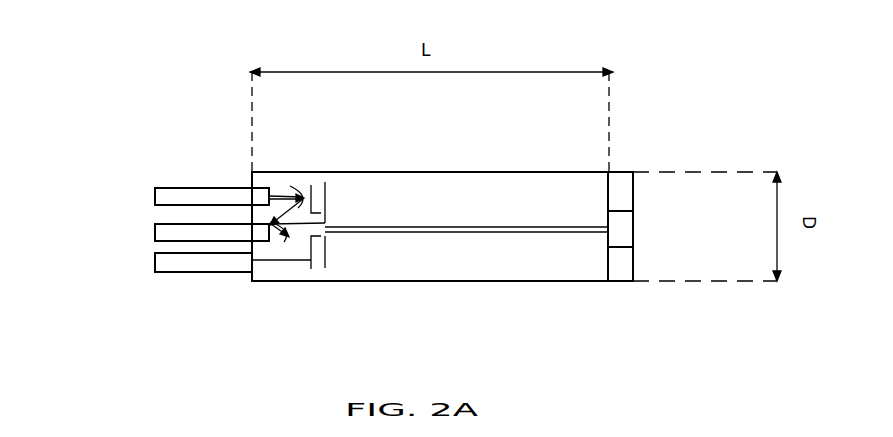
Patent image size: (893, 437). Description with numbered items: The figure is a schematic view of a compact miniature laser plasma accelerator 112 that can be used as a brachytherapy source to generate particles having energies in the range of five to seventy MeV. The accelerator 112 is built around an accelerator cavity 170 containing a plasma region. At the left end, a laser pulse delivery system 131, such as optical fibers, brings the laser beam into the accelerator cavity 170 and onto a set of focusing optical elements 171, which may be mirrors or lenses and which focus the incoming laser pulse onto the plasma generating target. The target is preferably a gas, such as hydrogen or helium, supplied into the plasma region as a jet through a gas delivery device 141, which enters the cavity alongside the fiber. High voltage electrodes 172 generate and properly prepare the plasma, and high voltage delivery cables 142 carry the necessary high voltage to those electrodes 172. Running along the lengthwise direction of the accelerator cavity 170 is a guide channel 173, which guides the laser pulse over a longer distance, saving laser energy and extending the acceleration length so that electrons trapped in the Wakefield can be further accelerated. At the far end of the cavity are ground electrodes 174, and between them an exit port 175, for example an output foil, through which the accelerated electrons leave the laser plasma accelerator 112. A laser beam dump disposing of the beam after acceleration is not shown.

The laser plasma accelerator 112 is at (424, 168).
The laser pulse delivery system 131 is at (199, 187).
The gas delivery device 141 is at (155, 232).
The high voltage delivery cables 142 is at (197, 273).
The accelerator cavity 170 is at (272, 182).
The focusing optical elements 171 is at (294, 186).
The high voltage electrodes 172 is at (320, 186).
The guide channel 173 is at (470, 233).
The ground electrodes 174 is at (620, 181).
The exit port 175 is at (633, 228).